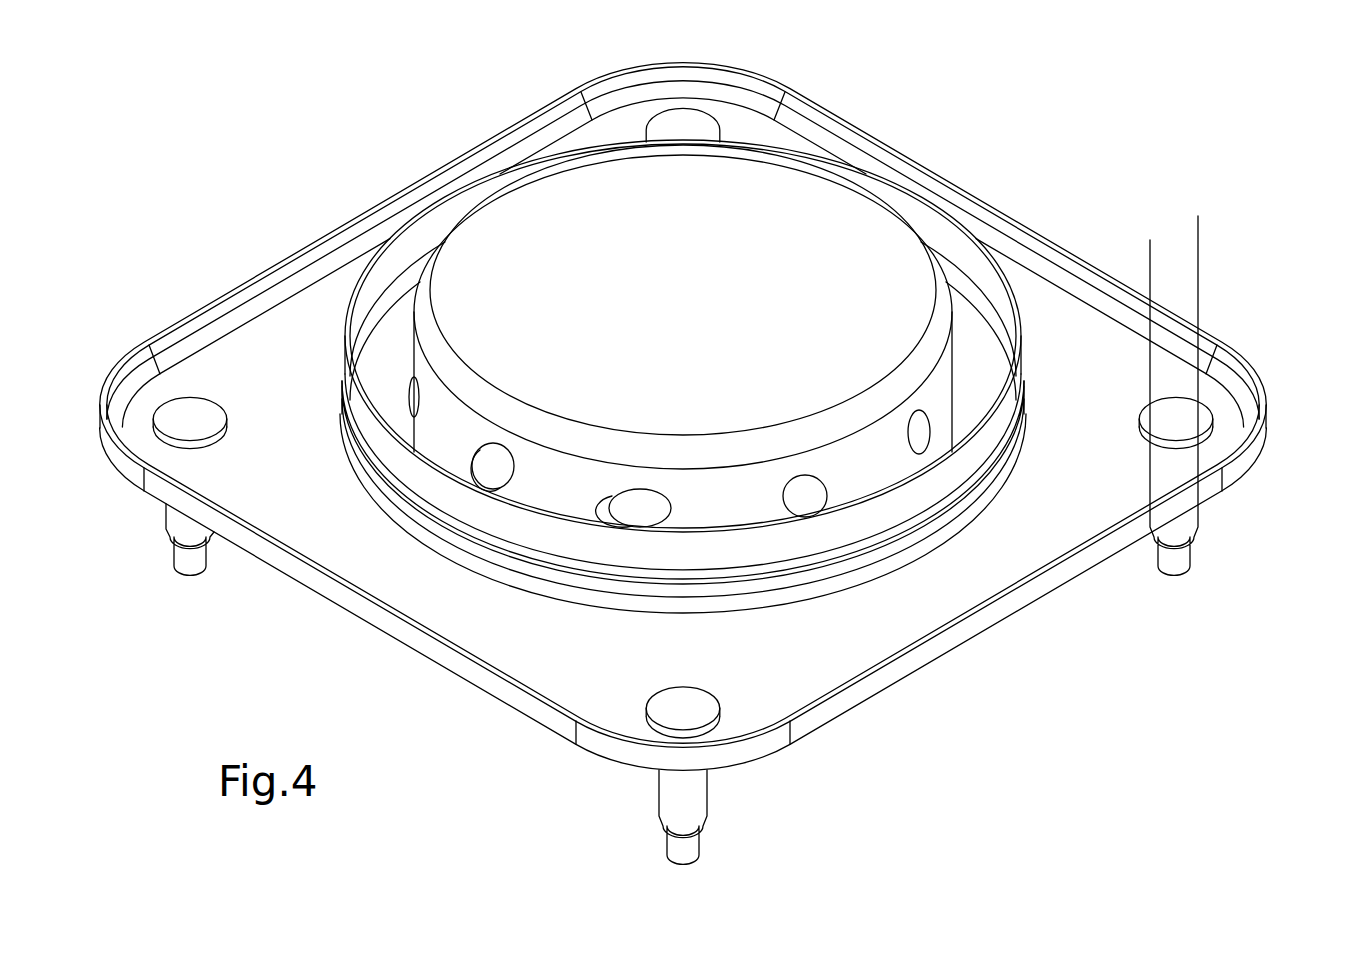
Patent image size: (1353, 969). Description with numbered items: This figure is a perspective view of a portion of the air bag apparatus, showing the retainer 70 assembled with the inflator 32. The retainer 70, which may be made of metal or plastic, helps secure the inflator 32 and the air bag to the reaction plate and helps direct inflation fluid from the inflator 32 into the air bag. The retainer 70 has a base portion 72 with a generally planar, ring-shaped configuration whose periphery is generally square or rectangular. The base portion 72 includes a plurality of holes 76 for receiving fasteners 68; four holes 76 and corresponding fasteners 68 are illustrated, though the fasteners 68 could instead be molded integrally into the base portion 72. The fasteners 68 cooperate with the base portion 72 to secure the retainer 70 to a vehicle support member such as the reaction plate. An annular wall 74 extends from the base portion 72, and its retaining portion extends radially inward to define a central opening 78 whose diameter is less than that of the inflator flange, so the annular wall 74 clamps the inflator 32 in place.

The inflator 32 is at (816, 213).
The fasteners 68 is at (188, 531).
The retainer 70 is at (1072, 241).
The base portion 72 is at (1120, 370).
The annular wall 74 is at (905, 520).
The holes 76 is at (1197, 447).
The central opening 78 is at (393, 252).